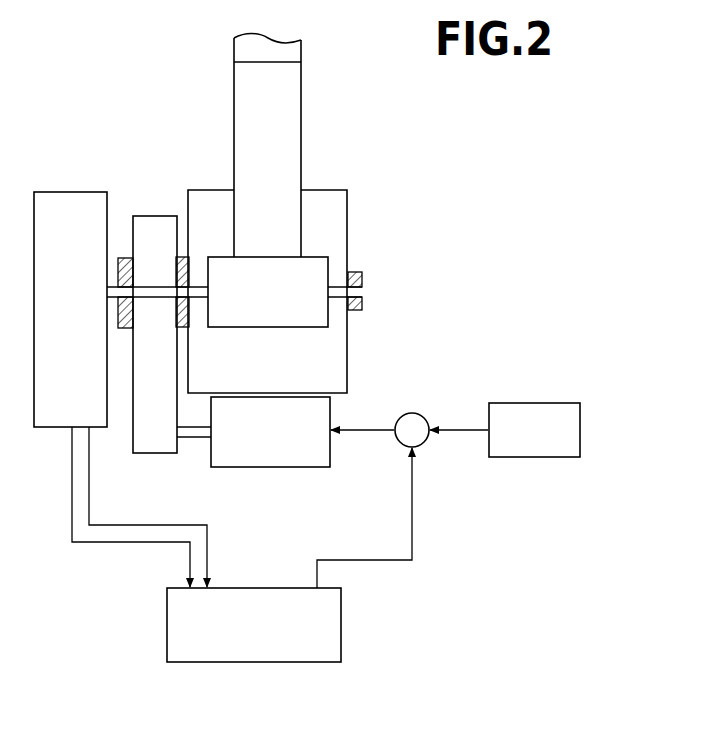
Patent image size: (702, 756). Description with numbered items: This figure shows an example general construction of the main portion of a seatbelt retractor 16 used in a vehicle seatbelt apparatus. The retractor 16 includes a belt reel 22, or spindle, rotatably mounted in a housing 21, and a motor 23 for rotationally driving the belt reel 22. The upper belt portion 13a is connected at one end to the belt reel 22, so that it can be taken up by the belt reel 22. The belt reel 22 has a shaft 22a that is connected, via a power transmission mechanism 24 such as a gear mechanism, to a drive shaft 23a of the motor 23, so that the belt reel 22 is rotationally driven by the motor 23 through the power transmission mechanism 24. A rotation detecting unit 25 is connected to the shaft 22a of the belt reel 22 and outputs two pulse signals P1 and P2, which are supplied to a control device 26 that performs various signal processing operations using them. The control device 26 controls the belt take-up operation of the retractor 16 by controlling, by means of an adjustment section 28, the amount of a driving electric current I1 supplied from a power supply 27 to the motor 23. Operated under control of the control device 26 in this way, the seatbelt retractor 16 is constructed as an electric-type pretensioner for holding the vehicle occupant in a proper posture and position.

The upper belt portion 13a is at (285, 103).
The seatbelt retractor 16 is at (447, 181).
The housing 21 is at (348, 207).
The belt reel 22 is at (318, 267).
The shaft 22a is at (198, 288).
The motor 23 is at (272, 467).
The drive shaft 23a is at (192, 433).
The power transmission mechanism 24 is at (143, 222).
The rotation detecting unit 25 is at (55, 192).
The control device 26 is at (342, 613).
The power supply 27 is at (565, 403).
The adjustment section 28 is at (413, 413).
The driving electric current I1 is at (363, 428).
The pulse signal P1 is at (208, 568).
The pulse signal P2 is at (190, 568).